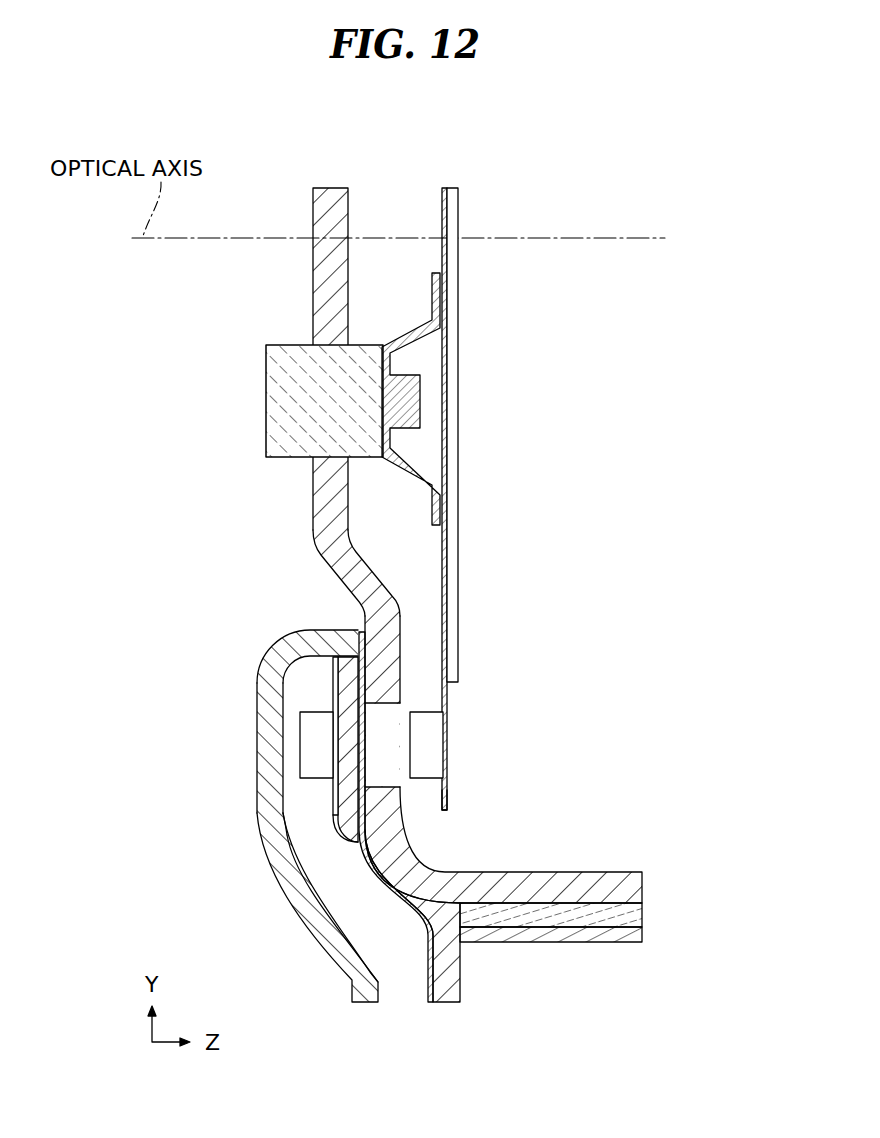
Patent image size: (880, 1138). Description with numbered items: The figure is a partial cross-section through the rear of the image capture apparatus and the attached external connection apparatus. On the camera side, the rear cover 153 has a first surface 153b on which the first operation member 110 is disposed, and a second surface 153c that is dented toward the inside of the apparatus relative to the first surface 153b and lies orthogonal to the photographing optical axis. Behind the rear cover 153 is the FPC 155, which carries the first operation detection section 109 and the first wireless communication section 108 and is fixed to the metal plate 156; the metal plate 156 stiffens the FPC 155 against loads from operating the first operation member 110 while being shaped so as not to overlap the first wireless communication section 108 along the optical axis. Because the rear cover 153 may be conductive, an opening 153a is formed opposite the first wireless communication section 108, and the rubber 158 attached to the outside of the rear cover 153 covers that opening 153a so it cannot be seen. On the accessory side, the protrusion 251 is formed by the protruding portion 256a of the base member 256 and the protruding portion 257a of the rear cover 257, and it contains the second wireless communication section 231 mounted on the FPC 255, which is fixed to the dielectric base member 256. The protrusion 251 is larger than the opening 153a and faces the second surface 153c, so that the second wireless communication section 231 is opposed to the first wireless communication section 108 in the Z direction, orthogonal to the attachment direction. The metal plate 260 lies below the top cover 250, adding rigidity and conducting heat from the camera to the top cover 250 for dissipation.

The first wireless communication section 108 is at (444, 712).
The first operation detection section 109 is at (450, 417).
The first operation member 110 is at (266, 395).
The rear cover 153 is at (318, 212).
The opening 153a is at (388, 762).
The first surface 153b is at (312, 503).
The second surface 153c is at (362, 602).
The FPC 155 is at (448, 803).
The metal plate 156 is at (460, 228).
The rubber 158 is at (358, 643).
The second wireless communication section 231 is at (300, 746).
The top cover 250 is at (643, 905).
The protrusion 251 is at (205, 567).
The FPC 255 is at (333, 828).
The base member 256 is at (460, 980).
The protruding portion 256a is at (298, 633).
The rear cover 257 is at (318, 946).
The protruding portion 257a is at (258, 686).
The metal plate 260 is at (643, 940).